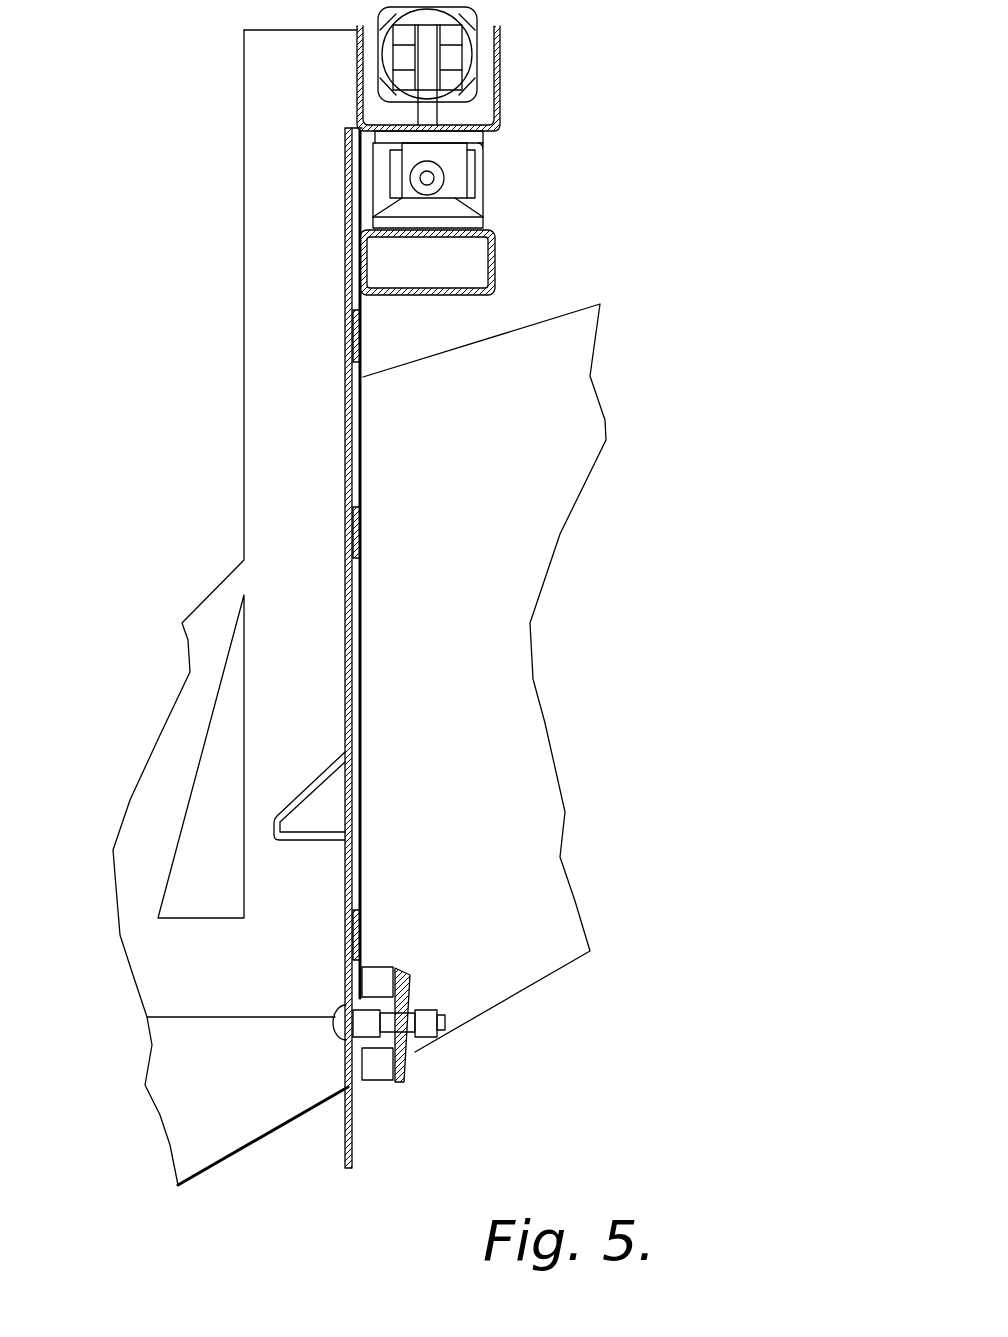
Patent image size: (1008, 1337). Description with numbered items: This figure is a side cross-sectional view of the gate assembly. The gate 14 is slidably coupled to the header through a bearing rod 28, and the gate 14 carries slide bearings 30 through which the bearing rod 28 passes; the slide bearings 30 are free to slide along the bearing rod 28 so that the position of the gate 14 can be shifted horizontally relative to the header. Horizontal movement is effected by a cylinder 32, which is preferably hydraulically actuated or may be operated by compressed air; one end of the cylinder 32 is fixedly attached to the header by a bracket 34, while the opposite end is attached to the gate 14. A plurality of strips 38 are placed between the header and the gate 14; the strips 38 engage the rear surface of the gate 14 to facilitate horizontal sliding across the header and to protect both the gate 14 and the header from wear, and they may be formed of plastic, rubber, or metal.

The gate 14 is at (273, 315).
The bearing rod 28 is at (430, 178).
The slide bearing 30 is at (397, 137).
The cylinder 32 is at (470, 52).
The bracket 34 is at (478, 194).
The strip 38 is at (362, 340).